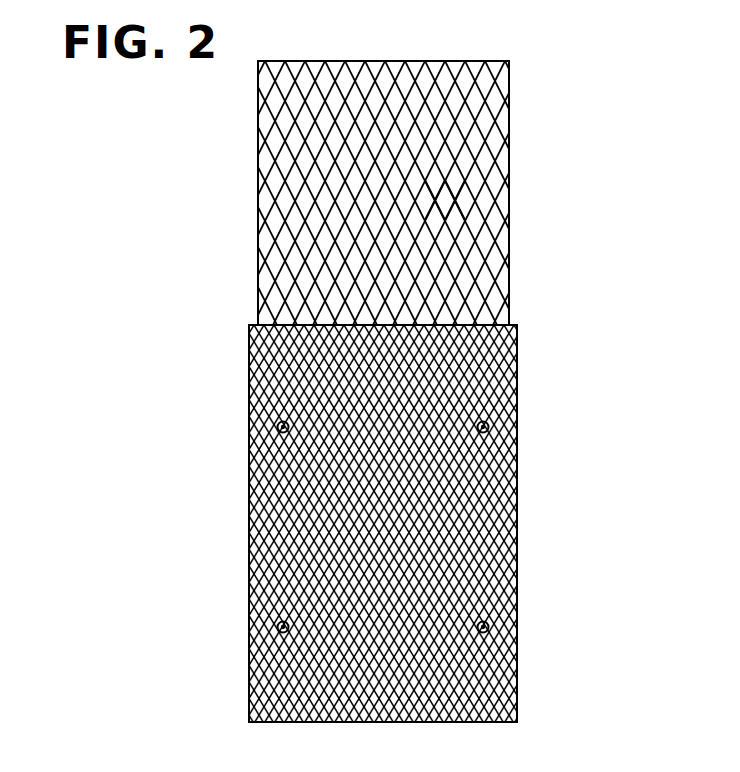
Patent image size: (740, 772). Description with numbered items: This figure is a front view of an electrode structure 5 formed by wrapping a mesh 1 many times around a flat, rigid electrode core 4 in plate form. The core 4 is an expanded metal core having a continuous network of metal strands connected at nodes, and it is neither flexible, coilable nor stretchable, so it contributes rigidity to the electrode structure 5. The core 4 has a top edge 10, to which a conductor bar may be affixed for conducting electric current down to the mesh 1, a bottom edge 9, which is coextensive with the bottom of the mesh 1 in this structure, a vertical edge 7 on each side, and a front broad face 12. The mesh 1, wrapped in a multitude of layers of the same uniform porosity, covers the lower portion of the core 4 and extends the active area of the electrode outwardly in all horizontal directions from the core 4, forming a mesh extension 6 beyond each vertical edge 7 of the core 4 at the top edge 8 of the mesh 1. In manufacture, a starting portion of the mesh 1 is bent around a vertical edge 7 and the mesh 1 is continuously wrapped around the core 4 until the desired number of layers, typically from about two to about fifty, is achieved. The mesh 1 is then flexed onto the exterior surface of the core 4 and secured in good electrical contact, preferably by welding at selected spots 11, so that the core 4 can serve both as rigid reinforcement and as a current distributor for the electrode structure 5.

The mesh 1 is at (518, 502).
The electrode core 4 is at (511, 66).
The electrode structure 5 is at (195, 288).
The mesh extension 6 is at (252, 325).
The vertical edge of the core 7 is at (259, 170).
The top edge of the mesh 8 is at (499, 312).
The bottom edge of the core 9 is at (486, 726).
The top edge of the core 10 is at (307, 60).
The spots 11 is at (280, 428).
The front broad face of the core 12 is at (436, 216).